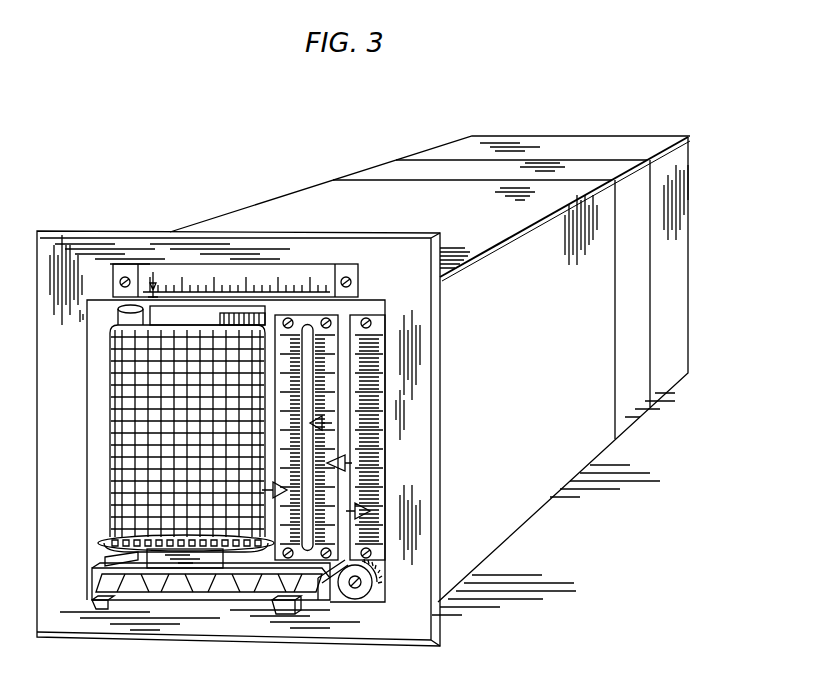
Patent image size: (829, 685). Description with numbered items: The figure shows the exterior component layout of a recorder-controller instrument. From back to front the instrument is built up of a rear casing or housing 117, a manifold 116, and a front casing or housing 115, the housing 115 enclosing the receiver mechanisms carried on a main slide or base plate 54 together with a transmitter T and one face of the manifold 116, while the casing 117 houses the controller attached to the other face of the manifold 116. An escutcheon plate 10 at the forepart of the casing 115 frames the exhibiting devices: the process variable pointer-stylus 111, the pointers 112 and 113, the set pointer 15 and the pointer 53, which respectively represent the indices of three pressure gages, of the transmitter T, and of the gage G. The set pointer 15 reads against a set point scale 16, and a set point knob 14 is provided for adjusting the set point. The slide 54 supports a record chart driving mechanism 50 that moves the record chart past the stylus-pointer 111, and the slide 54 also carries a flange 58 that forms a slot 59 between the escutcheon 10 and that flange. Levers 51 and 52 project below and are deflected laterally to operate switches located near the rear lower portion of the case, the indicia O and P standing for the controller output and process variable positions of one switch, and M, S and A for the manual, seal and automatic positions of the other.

The escutcheon plate 10 is at (400, 312).
The set point knob 14 is at (375, 592).
The set pointer 15 is at (372, 512).
The set point scale 16 is at (380, 353).
The record chart driving mechanism 50 is at (190, 467).
The automatic-manual transfer lever 51 is at (290, 616).
The switch operating lever 52 is at (100, 608).
The gage pointer 53 is at (153, 280).
The main slide or base plate 54 is at (333, 590).
The flange 58 is at (175, 583).
The slot 59 is at (215, 595).
The process variable pointer-stylus 111 is at (290, 488).
The pointer 112 is at (332, 423).
The pointer 113 is at (350, 463).
The casing or housing 115 is at (273, 200).
The manifold 116 is at (383, 170).
The casing or housing 117 is at (450, 143).
The gage G is at (193, 283).
The transmitter T is at (385, 388).